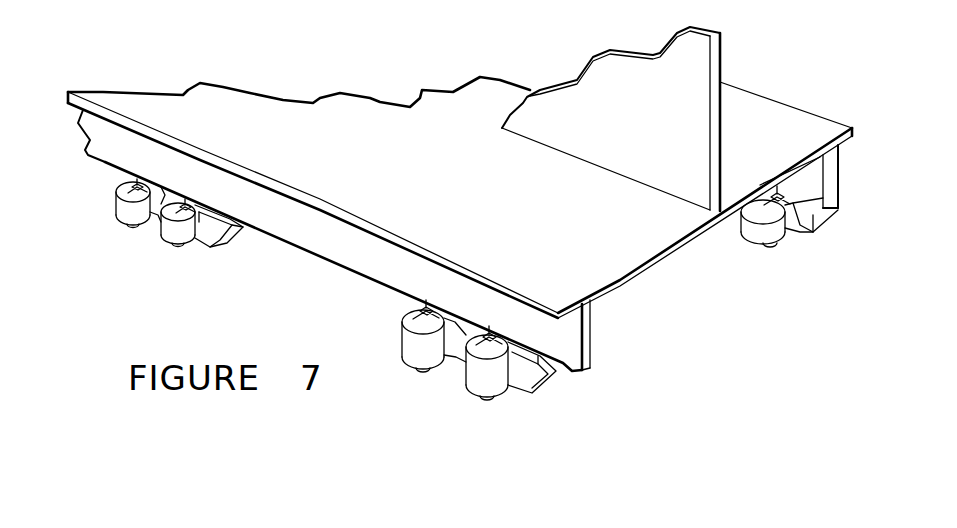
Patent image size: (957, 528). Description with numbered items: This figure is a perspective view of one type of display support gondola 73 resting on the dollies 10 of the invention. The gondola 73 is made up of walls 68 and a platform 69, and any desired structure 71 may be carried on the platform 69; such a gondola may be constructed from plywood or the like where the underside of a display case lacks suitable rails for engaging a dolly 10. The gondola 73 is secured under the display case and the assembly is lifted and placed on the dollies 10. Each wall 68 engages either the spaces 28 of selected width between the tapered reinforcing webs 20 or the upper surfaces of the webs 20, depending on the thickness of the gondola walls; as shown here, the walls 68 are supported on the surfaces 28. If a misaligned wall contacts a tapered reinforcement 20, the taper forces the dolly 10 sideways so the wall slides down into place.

The dolly 10 is at (450, 296).
The tapered reinforcing web 20 is at (408, 320).
The space 28 is at (120, 213).
The wall 68 is at (810, 178).
The platform 69 is at (518, 208).
The structure 71 is at (647, 118).
The gondola 73 is at (393, 77).